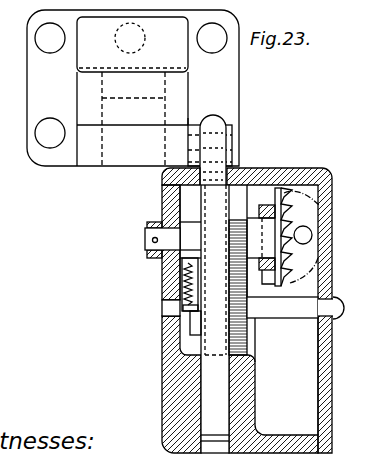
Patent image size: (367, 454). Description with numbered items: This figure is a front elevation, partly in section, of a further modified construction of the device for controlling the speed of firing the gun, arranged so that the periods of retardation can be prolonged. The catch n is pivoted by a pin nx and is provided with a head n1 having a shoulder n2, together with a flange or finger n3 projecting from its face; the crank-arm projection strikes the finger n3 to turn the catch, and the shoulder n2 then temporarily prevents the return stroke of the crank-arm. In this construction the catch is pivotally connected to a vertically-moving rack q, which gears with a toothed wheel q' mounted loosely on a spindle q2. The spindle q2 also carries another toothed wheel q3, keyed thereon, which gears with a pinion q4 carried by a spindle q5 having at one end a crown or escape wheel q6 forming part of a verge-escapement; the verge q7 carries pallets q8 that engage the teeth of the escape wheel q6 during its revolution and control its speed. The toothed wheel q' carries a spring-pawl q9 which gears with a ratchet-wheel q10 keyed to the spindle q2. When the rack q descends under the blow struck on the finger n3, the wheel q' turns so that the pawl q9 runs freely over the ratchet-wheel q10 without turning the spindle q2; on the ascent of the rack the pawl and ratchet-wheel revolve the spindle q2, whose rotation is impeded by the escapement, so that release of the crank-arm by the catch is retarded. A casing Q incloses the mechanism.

The catch n is at (133, 88).
The head n1 is at (132, 44).
The shoulder n2 is at (210, 117).
The flange or finger n3 is at (177, 145).
The pin nx is at (279, 147).
The casing Q is at (158, 438).
The rack q is at (224, 319).
The toothed wheel q' is at (170, 336).
The spindle q2 is at (295, 308).
The toothed wheel q3 is at (286, 376).
The pinion q4 is at (258, 236).
The spindle q5 is at (168, 251).
The crown or escape wheel q6 is at (324, 200).
The verge q7 is at (313, 235).
The pallets q8 is at (320, 216).
The spring-pawl q9 is at (167, 284).
The ratchet-wheel q10 is at (163, 318).